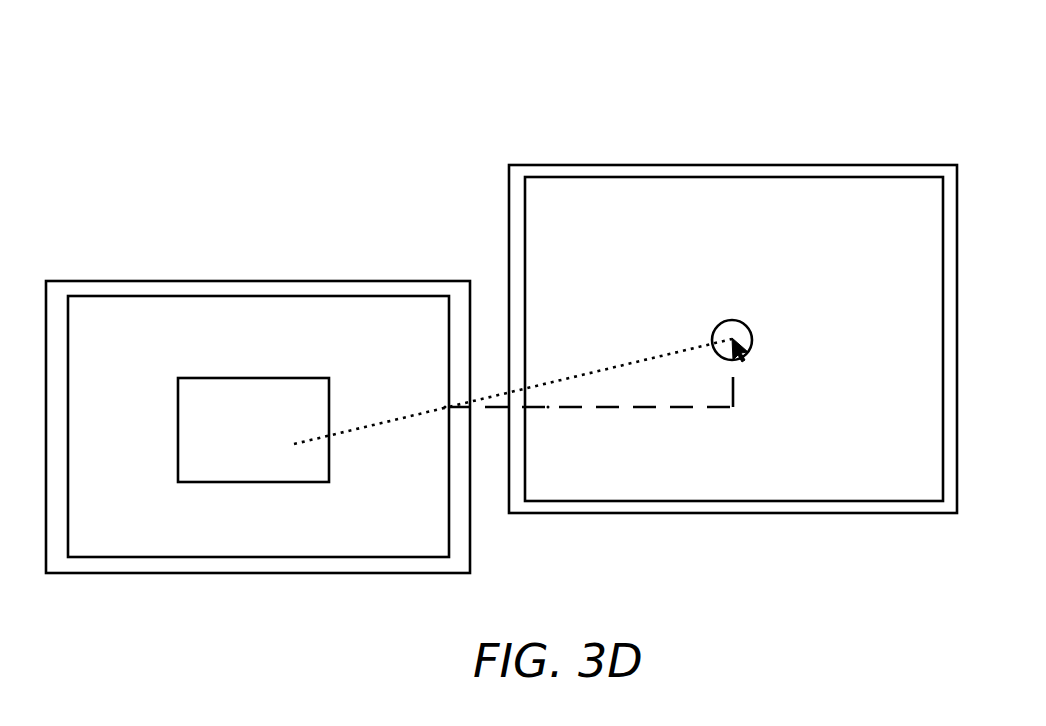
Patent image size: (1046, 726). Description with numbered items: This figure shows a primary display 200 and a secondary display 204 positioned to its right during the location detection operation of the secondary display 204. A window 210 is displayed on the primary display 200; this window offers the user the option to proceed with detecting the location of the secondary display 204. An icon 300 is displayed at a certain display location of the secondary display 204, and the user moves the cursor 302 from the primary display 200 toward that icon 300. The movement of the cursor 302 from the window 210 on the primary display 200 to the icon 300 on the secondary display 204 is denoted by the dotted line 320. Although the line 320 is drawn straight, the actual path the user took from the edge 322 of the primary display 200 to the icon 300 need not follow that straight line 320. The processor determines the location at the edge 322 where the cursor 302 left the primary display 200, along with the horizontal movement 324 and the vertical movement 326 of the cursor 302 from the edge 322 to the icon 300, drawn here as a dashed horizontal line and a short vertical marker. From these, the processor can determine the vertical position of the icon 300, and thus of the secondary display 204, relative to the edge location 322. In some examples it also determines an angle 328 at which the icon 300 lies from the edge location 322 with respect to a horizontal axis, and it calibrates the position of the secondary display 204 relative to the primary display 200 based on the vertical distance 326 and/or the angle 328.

The primary display 200 is at (233, 280).
The secondary display 204 is at (622, 163).
The window 210 is at (303, 378).
The icon 300 is at (750, 320).
The cursor 302 is at (748, 347).
The dotted line 320 is at (578, 373).
The edge 322 is at (445, 407).
The horizontal movement 324 is at (675, 407).
The vertical movement 326 is at (735, 383).
The angle 328 is at (543, 385).